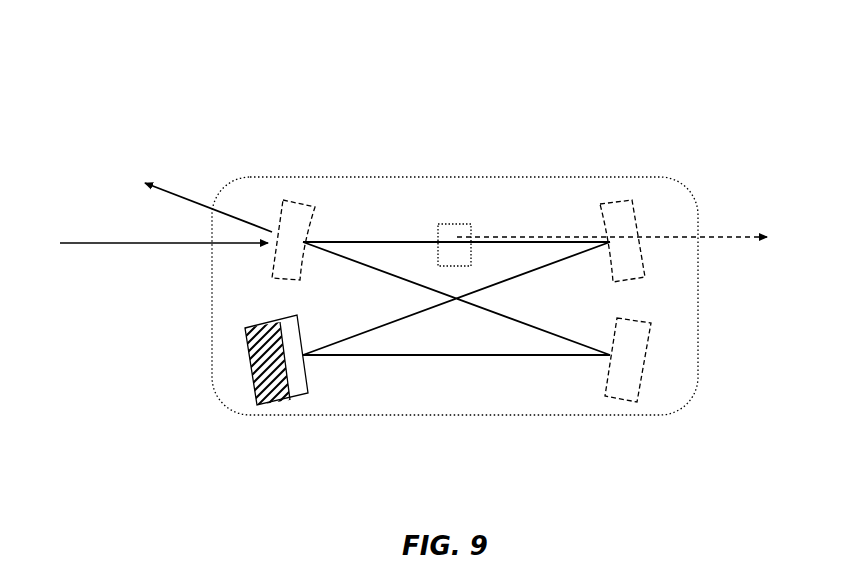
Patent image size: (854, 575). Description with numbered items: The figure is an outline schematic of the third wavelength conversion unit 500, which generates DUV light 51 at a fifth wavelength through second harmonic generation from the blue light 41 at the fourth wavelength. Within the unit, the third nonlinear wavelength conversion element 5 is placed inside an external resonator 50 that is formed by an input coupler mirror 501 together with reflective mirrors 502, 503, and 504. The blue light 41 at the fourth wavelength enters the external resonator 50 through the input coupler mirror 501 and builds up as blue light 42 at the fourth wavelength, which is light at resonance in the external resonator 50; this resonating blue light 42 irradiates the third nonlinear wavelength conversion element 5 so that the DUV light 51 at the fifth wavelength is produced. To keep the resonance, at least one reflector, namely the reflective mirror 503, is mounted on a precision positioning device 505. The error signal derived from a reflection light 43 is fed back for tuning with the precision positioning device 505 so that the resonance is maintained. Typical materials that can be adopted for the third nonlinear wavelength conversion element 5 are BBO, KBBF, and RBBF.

The third wavelength conversion unit 500 is at (122, 85).
The external resonator 50 is at (536, 174).
The blue light at the fourth wavelength 41 is at (60, 240).
The reflection light 43 is at (178, 192).
The blue light at the fourth wavelength 42 is at (347, 234).
The DUV light at the fifth wavelength 51 is at (716, 234).
The third nonlinear wavelength conversion element 5 is at (453, 217).
The input coupler mirror 501 is at (293, 197).
The reflective mirror 502 is at (613, 197).
The reflective mirror 503 is at (271, 411).
The reflective mirror 504 is at (622, 404).
The precision positioning device 505 is at (260, 406).